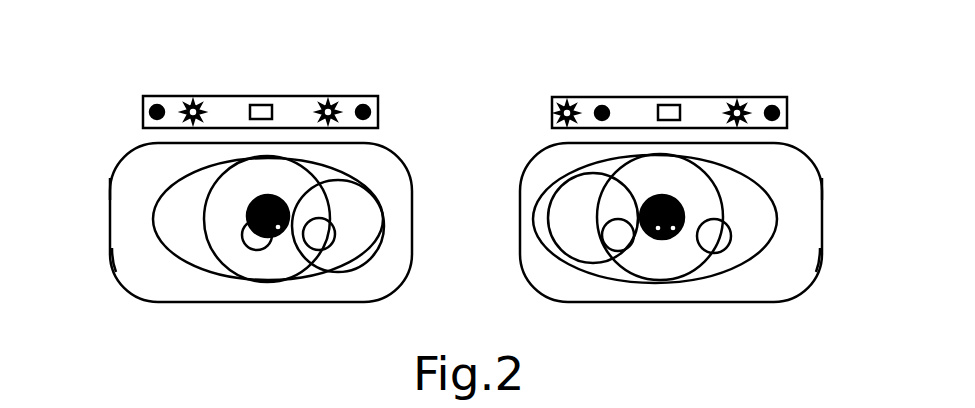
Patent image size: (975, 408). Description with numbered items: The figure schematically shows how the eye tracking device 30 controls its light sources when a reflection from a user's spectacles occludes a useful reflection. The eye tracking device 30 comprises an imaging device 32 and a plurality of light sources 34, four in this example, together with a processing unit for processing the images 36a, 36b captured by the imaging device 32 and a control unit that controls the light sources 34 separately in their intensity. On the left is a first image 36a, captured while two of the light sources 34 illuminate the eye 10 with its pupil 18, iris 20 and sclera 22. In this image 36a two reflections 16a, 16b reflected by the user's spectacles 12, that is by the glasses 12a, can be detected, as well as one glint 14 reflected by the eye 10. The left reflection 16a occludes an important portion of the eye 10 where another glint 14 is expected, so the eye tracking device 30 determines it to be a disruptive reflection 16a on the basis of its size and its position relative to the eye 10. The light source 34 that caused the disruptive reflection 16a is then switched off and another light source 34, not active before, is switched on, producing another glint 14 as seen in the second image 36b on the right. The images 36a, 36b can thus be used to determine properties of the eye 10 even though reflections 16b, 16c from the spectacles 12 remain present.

The eye 10 is at (180, 239).
The spectacles 12 is at (117, 148).
The glasses 12a is at (121, 188).
The glint 14 is at (280, 232).
The disruptive reflection 16a is at (252, 242).
The reflection 16b is at (328, 237).
The reflection 16c is at (612, 237).
The pupil 18 is at (283, 201).
The iris 20 is at (298, 255).
The sclera 22 is at (560, 216).
The eye tracking device 30 is at (351, 83).
The imaging device 32 is at (259, 96).
The light sources 34 is at (157, 96).
The first image 36a is at (88, 264).
The second image 36b is at (838, 271).